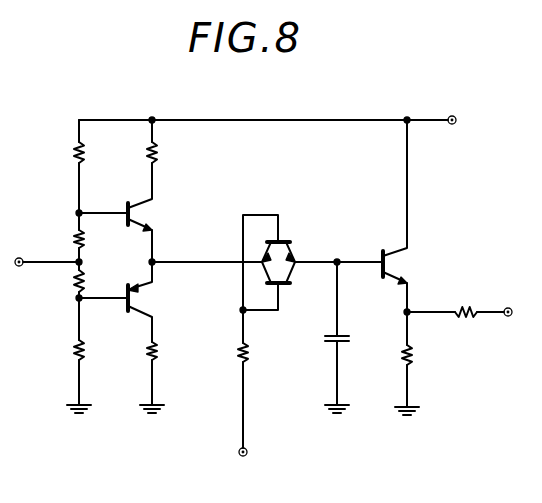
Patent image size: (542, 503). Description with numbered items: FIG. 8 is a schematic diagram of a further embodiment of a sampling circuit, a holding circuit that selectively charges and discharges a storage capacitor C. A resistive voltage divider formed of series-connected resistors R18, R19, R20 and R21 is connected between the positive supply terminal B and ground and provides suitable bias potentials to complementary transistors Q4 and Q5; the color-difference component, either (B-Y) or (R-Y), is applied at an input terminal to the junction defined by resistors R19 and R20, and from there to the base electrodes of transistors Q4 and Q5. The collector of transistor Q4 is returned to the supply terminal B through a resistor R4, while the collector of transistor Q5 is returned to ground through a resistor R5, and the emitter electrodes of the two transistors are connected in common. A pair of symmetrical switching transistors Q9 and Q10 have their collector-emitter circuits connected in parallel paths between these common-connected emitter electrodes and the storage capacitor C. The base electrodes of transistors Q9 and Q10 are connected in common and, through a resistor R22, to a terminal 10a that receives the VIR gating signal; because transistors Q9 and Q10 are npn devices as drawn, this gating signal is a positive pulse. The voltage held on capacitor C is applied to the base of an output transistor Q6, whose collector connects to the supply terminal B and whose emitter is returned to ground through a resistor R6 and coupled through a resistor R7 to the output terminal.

The positive supply terminal B is at (471, 121).
The resistor R18 is at (76, 153).
The resistor R19 is at (76, 233).
The resistor R20 is at (75, 282).
The resistor R21 is at (76, 349).
The resistor R4 is at (157, 153).
The resistor R5 is at (157, 351).
The resistor R22 is at (247, 352).
The resistor R6 is at (411, 355).
The resistor R7 is at (462, 305).
The storage capacitor C is at (348, 339).
The transistor Q4 is at (125, 204).
The transistor Q5 is at (127, 287).
The transistor Q6 is at (383, 251).
The symmetrical switching transistor Q9 is at (285, 242).
The symmetrical switching transistor Q10 is at (291, 284).
The VIR gating signal input terminal 10a is at (247, 453).